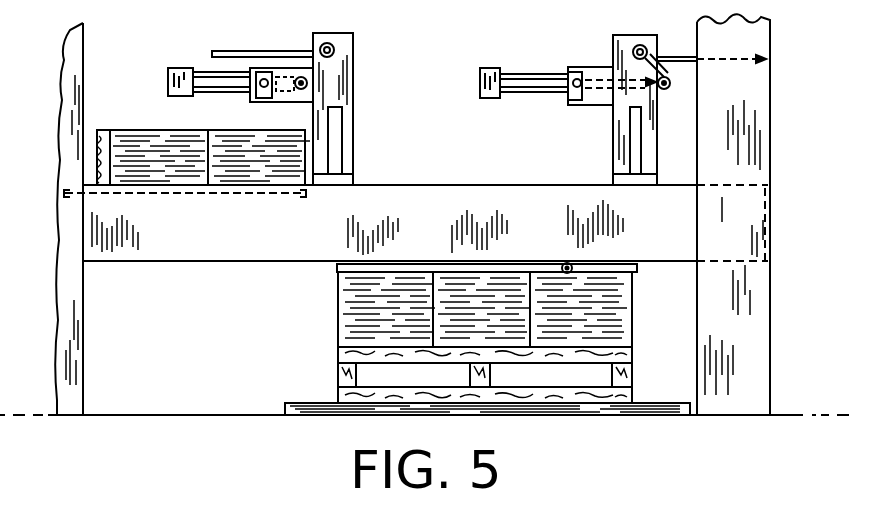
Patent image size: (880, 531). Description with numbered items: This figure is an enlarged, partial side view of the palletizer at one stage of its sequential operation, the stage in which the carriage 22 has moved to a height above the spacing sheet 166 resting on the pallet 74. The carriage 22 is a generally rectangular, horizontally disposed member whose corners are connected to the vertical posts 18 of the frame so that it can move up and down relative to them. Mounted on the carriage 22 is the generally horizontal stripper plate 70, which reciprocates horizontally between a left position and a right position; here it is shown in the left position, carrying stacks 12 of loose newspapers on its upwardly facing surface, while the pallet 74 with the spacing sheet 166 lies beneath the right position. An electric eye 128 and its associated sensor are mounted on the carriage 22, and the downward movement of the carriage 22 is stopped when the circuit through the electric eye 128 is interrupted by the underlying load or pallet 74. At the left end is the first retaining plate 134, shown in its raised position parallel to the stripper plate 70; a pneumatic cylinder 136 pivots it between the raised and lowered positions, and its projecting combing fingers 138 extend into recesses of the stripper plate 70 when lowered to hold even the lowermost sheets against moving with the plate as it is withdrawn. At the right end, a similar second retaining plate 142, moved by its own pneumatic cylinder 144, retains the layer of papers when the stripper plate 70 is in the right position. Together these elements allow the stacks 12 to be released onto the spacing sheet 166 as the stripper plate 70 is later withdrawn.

The stacks 12 is at (253, 128).
The posts 18 is at (696, 35).
The carriage 22 is at (548, 197).
The stripper plate 70 is at (216, 203).
The pallet 74 is at (337, 352).
The electric eye 128 is at (578, 267).
The first retaining plate 134 is at (272, 50).
The pneumatic cylinder 136 is at (200, 95).
The fingers 138 is at (210, 54).
The second retaining plate 142 is at (718, 62).
The pneumatic cylinder 144 is at (542, 77).
The spacing sheet 166 is at (348, 266).